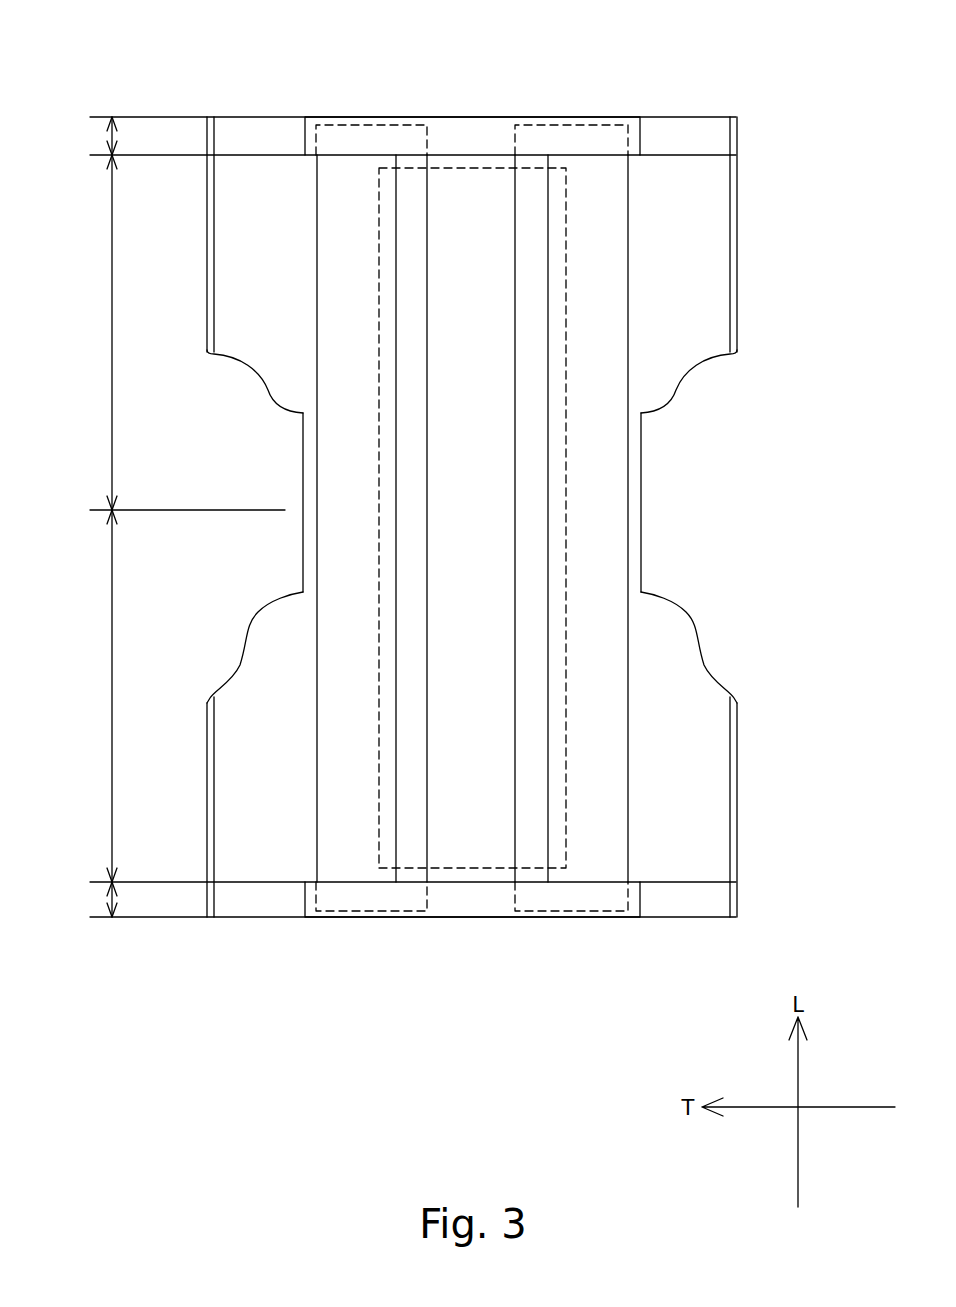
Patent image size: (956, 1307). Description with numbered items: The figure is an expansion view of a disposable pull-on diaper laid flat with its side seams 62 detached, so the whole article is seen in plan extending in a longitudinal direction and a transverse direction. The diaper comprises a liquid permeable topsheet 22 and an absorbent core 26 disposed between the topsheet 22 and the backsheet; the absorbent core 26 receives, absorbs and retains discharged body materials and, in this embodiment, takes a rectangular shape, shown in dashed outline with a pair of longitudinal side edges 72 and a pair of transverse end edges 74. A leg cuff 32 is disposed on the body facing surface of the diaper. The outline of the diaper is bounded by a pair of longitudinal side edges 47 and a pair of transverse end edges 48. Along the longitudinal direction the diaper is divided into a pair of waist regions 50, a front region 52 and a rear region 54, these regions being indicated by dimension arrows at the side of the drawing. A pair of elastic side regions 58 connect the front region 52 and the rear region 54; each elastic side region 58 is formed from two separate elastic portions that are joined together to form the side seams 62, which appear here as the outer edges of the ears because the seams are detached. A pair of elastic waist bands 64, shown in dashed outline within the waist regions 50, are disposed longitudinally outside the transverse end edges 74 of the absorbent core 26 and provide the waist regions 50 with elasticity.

The topsheet 22 is at (485, 195).
The absorbent core 26 is at (455, 825).
The leg cuff 32 is at (411, 185).
The longitudinal side edges 47 is at (303, 480).
The transverse end edges 48 is at (453, 117).
The waist regions 50 is at (108, 137).
The front region 52 is at (112, 327).
The rear region 54 is at (112, 683).
The elastic side regions 58 is at (255, 218).
The side seams 62 is at (207, 318).
The elastic waist bands 64 is at (610, 143).
The longitudinal side edges of the absorbent core 72 is at (378, 424).
The transverse end edges of the absorbent core 74 is at (557, 150).